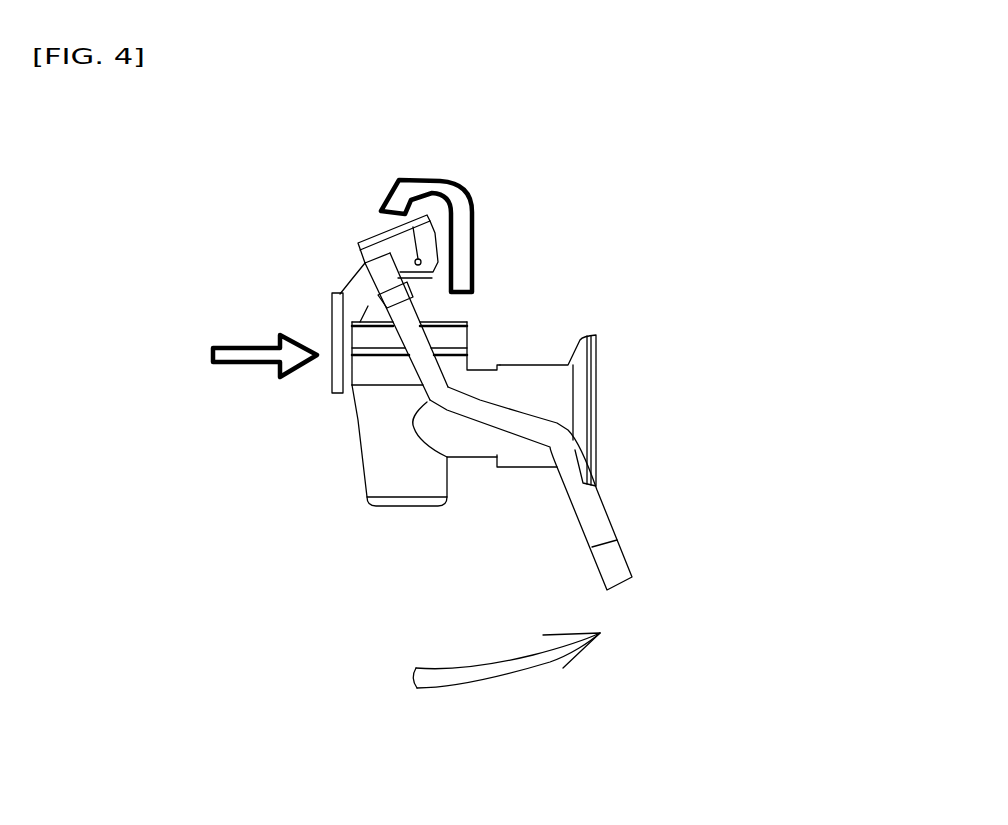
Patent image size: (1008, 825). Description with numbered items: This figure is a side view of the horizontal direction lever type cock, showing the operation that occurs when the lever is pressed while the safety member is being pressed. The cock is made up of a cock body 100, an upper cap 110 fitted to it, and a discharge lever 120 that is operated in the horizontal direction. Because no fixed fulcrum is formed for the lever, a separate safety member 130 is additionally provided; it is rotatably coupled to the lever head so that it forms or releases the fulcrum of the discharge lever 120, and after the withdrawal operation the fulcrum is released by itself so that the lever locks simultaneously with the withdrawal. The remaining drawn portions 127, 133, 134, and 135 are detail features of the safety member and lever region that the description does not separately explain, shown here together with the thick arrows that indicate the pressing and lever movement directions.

The cock body 100 is at (372, 427).
The upper cap 110 is at (455, 318).
The discharge lever 120 is at (622, 552).
The pipe inlet end 127 is at (450, 190).
The safety member 130 is at (340, 297).
The inlet opening 133 is at (290, 361).
The bracket 134 is at (437, 255).
The mounting plate 135 is at (337, 372).